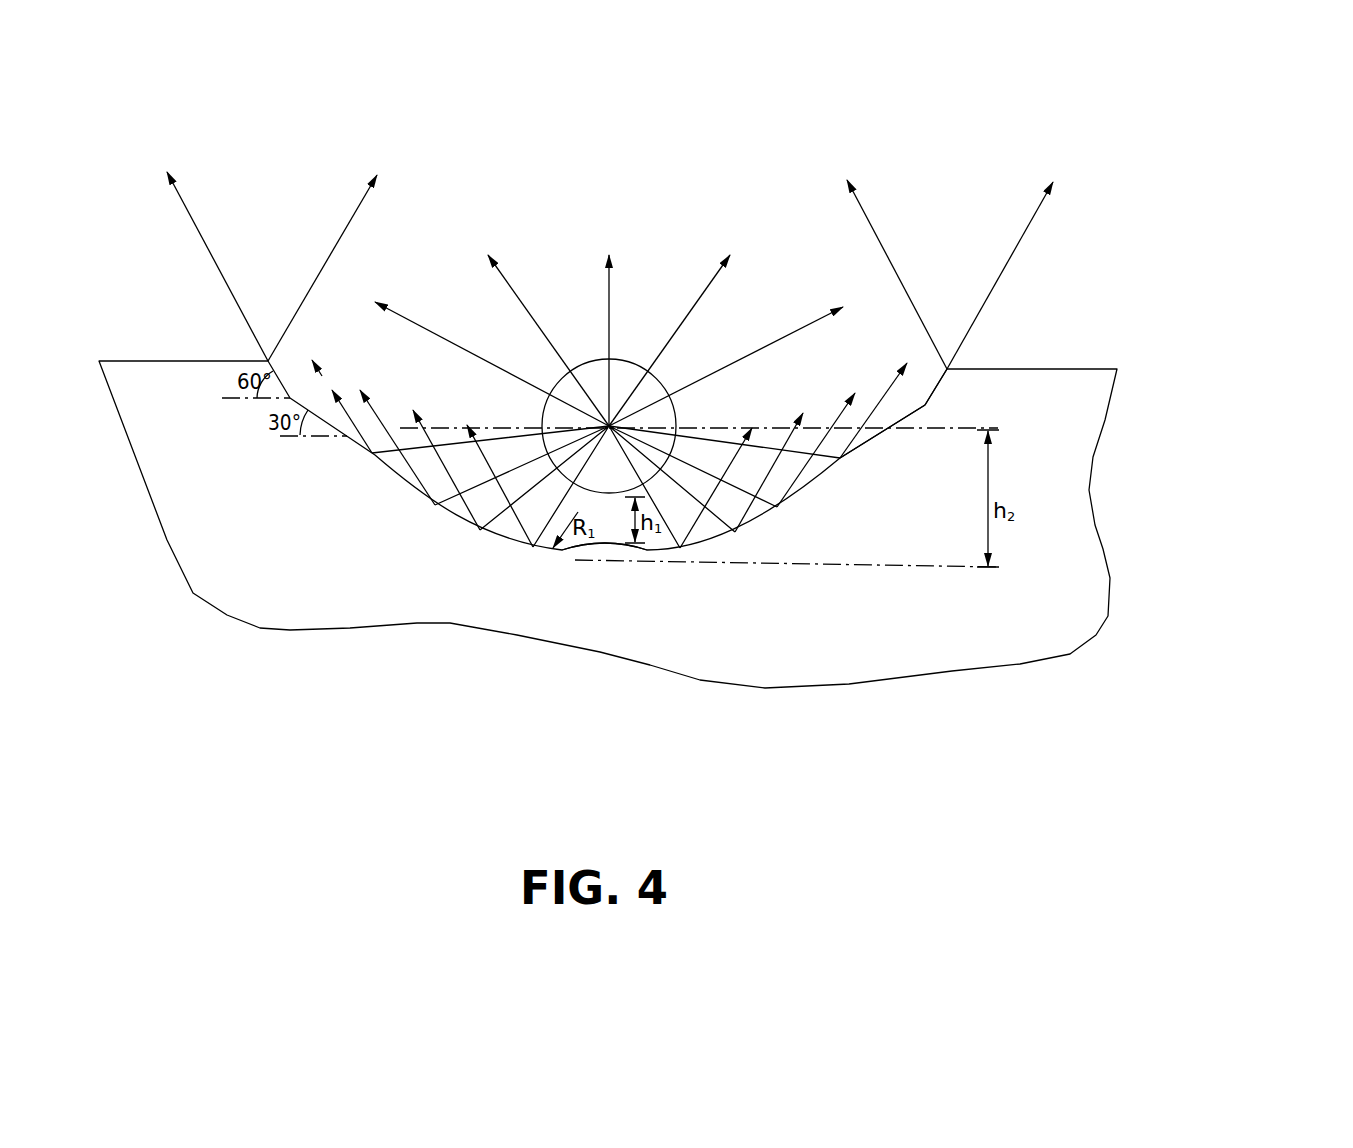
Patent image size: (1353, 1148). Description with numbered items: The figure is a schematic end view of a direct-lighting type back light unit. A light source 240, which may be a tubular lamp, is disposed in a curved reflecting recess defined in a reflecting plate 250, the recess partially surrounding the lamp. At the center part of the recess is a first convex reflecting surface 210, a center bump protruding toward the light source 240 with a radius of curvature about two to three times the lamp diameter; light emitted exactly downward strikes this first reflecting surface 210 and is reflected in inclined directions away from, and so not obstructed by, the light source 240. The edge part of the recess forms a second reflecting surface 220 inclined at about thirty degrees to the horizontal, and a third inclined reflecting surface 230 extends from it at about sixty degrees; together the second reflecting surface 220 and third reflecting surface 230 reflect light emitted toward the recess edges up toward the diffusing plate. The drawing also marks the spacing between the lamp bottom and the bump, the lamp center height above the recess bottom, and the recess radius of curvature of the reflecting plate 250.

The first convex reflecting surface 210 is at (605, 553).
The second reflecting surface 220 is at (903, 418).
The third inclined reflecting surface 230 is at (937, 388).
The light source 240 is at (622, 368).
The reflecting plate 250 is at (1105, 549).